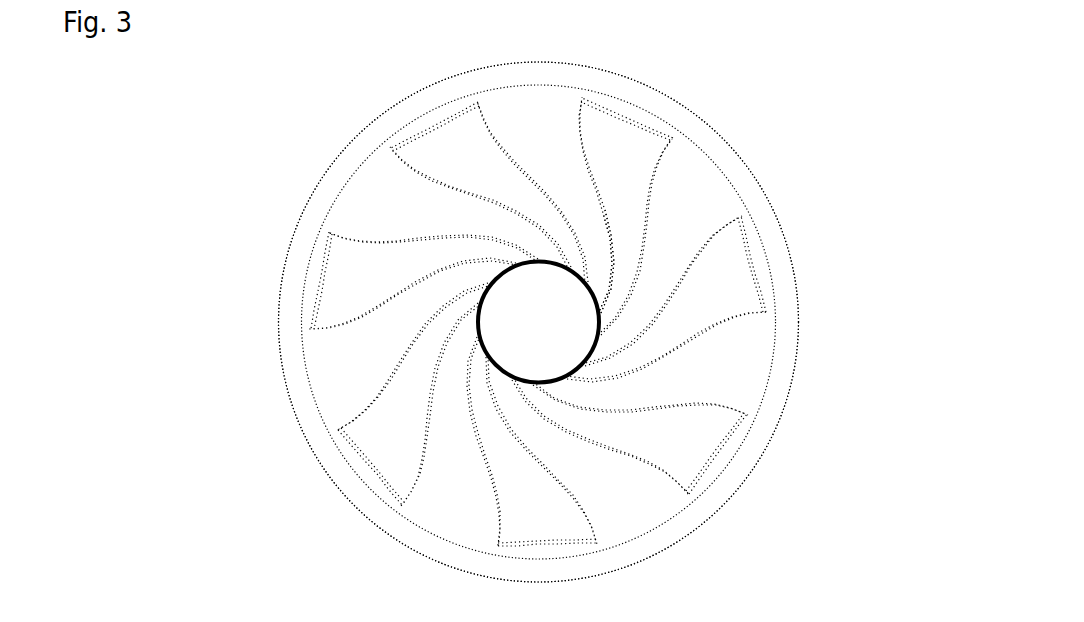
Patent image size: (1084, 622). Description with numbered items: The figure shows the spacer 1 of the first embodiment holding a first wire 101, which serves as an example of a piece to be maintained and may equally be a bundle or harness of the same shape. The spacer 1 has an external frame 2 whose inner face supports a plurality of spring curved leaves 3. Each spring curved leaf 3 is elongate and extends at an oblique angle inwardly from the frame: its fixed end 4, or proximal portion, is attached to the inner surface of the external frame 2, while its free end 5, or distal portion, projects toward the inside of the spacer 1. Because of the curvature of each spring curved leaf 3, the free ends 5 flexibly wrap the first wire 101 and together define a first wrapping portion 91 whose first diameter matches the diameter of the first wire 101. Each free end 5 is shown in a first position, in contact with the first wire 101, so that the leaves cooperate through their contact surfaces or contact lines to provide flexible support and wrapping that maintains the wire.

The spacer 1 is at (715, 100).
The external frame 2 is at (630, 557).
The spring curved leaf 3 is at (482, 157).
The fixed end 4 is at (430, 137).
The free end 5 is at (597, 277).
The first wrapping portion 91 is at (600, 308).
The first wire 101 is at (556, 335).